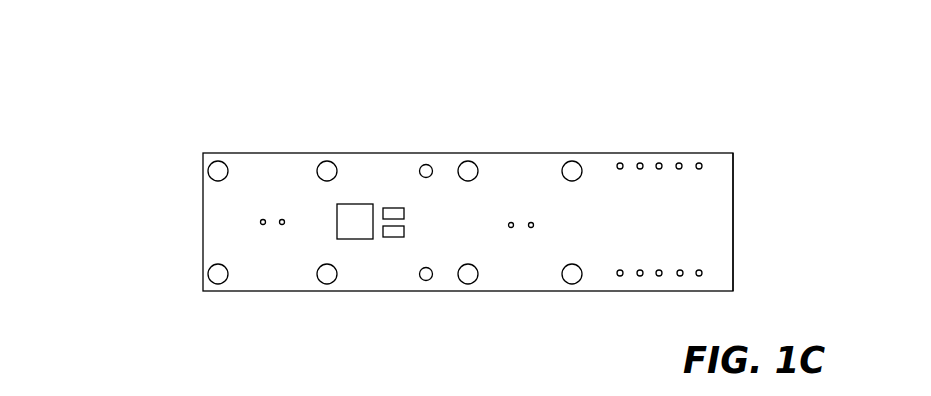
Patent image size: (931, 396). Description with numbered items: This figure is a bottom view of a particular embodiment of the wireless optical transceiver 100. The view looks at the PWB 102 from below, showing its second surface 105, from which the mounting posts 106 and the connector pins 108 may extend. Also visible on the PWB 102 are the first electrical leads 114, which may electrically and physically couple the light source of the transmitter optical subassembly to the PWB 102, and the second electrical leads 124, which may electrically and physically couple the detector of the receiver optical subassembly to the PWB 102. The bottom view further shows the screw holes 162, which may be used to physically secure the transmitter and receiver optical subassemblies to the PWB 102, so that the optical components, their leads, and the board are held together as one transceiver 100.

The wireless optical transceiver 100 is at (110, 52).
The PWB 102 is at (728, 153).
The second surface 105 is at (723, 206).
The mounting posts 106 is at (426, 281).
The connector pins 108 is at (640, 277).
The first electrical leads 114 is at (282, 225).
The second electrical leads 124 is at (531, 228).
The screw holes 162 is at (228, 166).